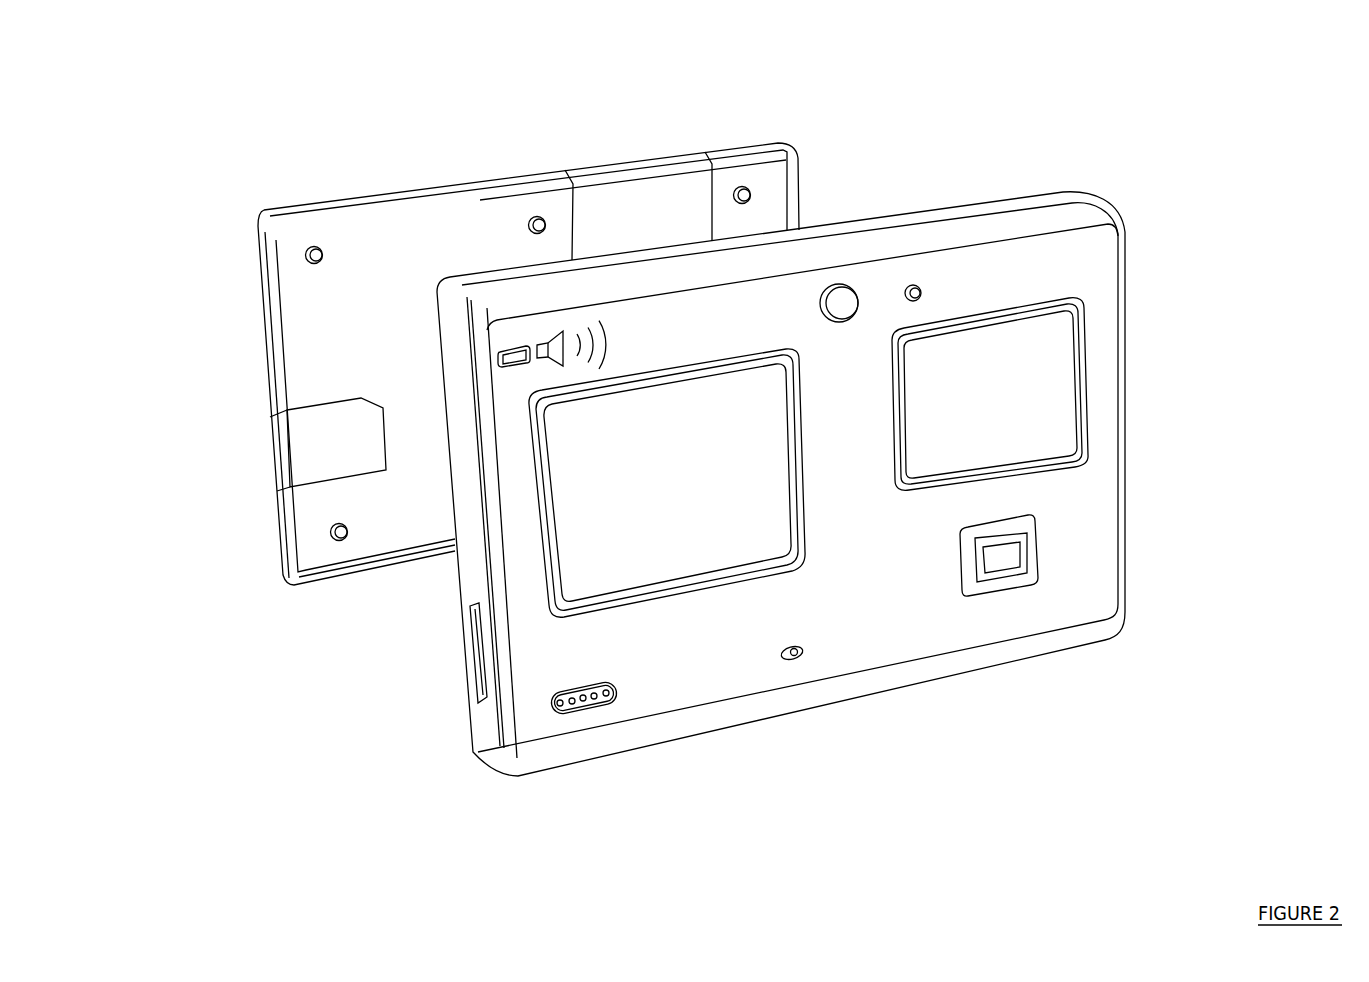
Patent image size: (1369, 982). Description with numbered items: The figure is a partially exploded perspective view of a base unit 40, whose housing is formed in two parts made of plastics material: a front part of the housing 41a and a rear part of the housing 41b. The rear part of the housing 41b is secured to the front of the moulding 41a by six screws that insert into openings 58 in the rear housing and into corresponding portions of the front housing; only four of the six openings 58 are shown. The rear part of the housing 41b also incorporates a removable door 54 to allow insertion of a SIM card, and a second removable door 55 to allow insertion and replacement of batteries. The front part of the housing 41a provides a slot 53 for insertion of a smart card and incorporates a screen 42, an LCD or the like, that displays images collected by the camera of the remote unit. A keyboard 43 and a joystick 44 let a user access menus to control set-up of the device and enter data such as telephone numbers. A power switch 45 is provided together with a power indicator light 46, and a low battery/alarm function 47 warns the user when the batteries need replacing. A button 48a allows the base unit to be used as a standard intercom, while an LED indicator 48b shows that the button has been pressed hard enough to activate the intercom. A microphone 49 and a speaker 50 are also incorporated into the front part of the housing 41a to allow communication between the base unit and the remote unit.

The base unit 40 is at (494, 797).
The front part of the housing 41a is at (463, 560).
The rear part of the housing 41b is at (390, 540).
The screen 42 is at (731, 528).
The keyboard 43 is at (925, 376).
The joystick 44 is at (1001, 556).
The power switch 45 is at (497, 356).
The power indicator light 46 is at (547, 343).
The low battery/alarm function 47 is at (582, 322).
The button 48a is at (841, 300).
The indicator 48b is at (914, 290).
The microphone 49 is at (805, 658).
The speaker 50 is at (595, 710).
The slot 53 is at (477, 658).
The removable door 54 is at (323, 440).
The second removable door 55 is at (662, 215).
The openings 58 is at (733, 183).